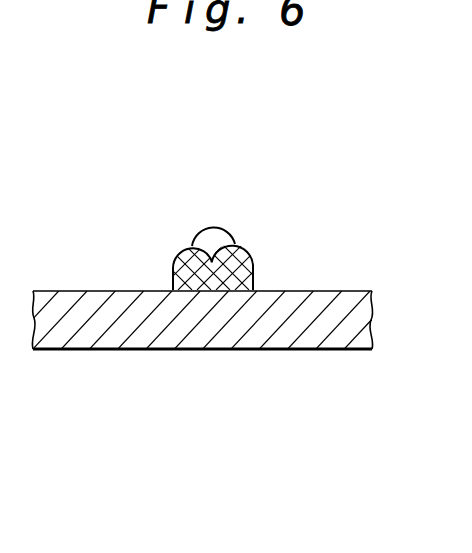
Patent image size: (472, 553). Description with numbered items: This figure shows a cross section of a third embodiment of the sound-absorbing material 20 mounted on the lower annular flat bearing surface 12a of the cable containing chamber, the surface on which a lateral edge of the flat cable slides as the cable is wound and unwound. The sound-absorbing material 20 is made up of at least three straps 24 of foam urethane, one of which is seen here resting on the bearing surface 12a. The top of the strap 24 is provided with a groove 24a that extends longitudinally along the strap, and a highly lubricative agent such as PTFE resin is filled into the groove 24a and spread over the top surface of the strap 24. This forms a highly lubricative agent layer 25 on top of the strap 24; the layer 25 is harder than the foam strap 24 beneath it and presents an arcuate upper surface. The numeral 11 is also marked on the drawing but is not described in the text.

The substrate 11 is at (199, 343).
The lower annular flat bearing surface 12a is at (98, 289).
The sound-absorbing material 20 is at (256, 218).
The strap 24 is at (223, 218).
The groove 24a is at (176, 258).
The highly lubricative agent layer 25 is at (213, 237).